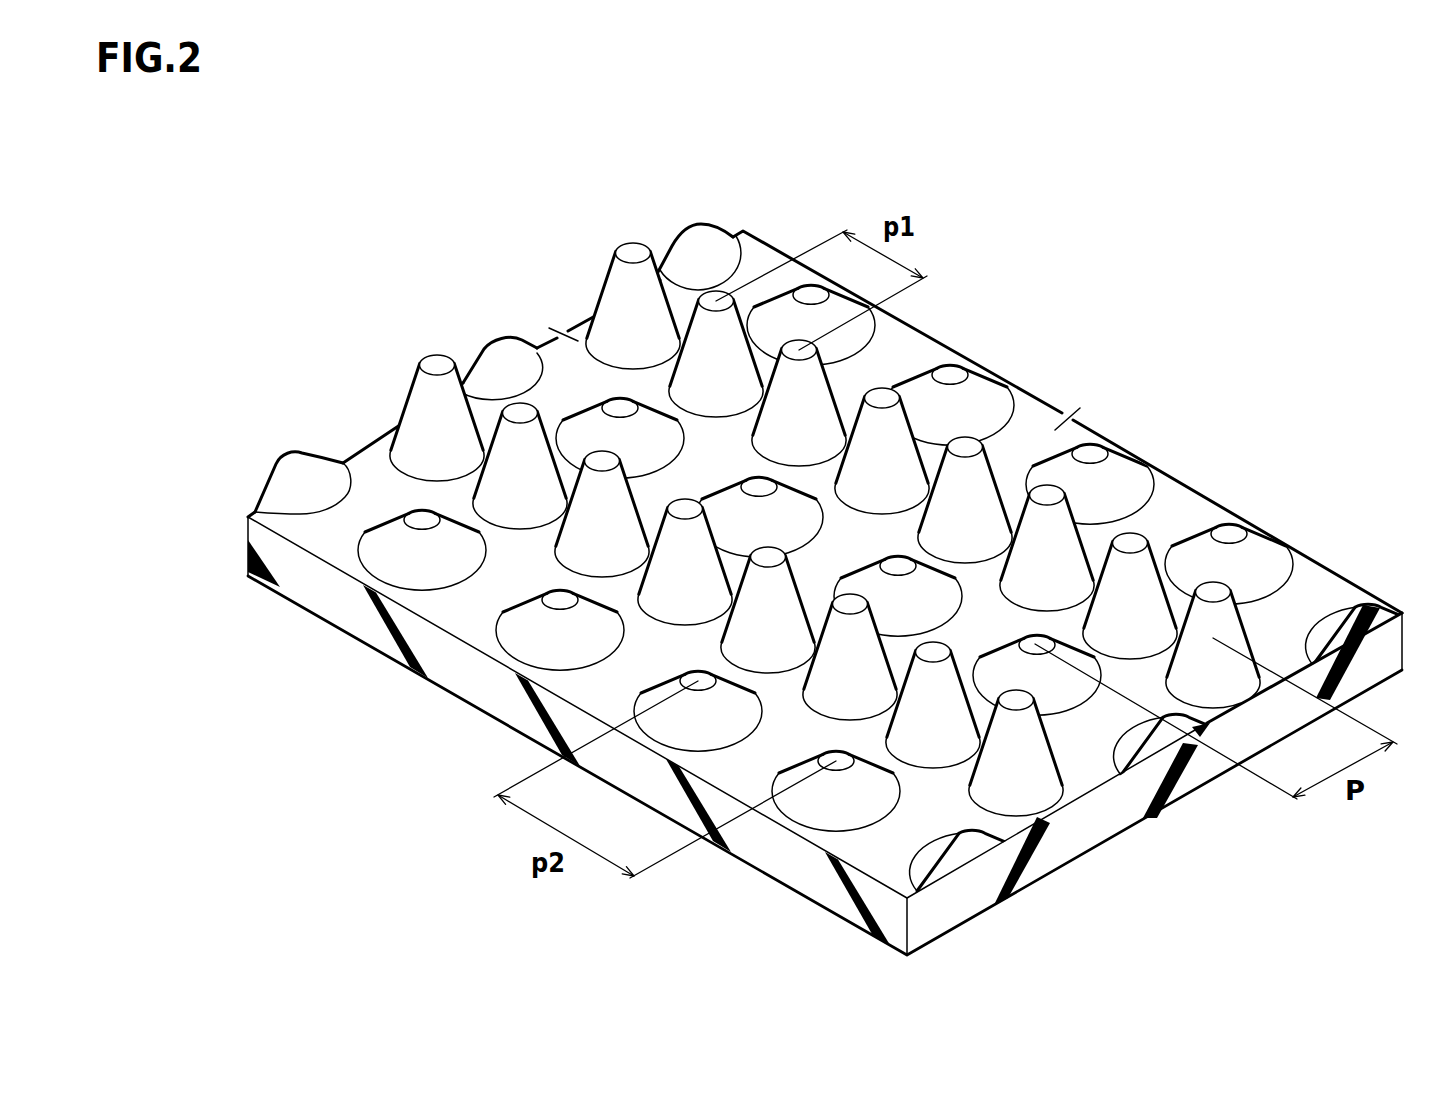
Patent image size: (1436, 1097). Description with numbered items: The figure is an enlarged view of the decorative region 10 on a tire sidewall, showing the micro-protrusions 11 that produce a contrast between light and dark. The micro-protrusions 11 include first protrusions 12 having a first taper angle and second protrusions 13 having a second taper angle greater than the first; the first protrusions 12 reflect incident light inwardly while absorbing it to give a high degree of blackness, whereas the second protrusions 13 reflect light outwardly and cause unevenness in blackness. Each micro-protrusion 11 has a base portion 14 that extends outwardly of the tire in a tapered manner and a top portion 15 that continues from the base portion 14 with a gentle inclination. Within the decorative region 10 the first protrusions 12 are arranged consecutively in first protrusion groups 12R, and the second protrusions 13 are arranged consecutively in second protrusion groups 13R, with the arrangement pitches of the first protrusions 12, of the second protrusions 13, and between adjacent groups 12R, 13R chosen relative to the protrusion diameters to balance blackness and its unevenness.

The decorative region 10 is at (1020, 325).
The micro-protrusions 11 is at (332, 288).
The first protrusions 12 is at (425, 413).
The first protrusion groups 12R is at (607, 226).
The second protrusions 13 is at (403, 555).
The second protrusion groups 13R is at (480, 326).
The base portion 14 is at (630, 300).
The top portion 15 is at (634, 253).